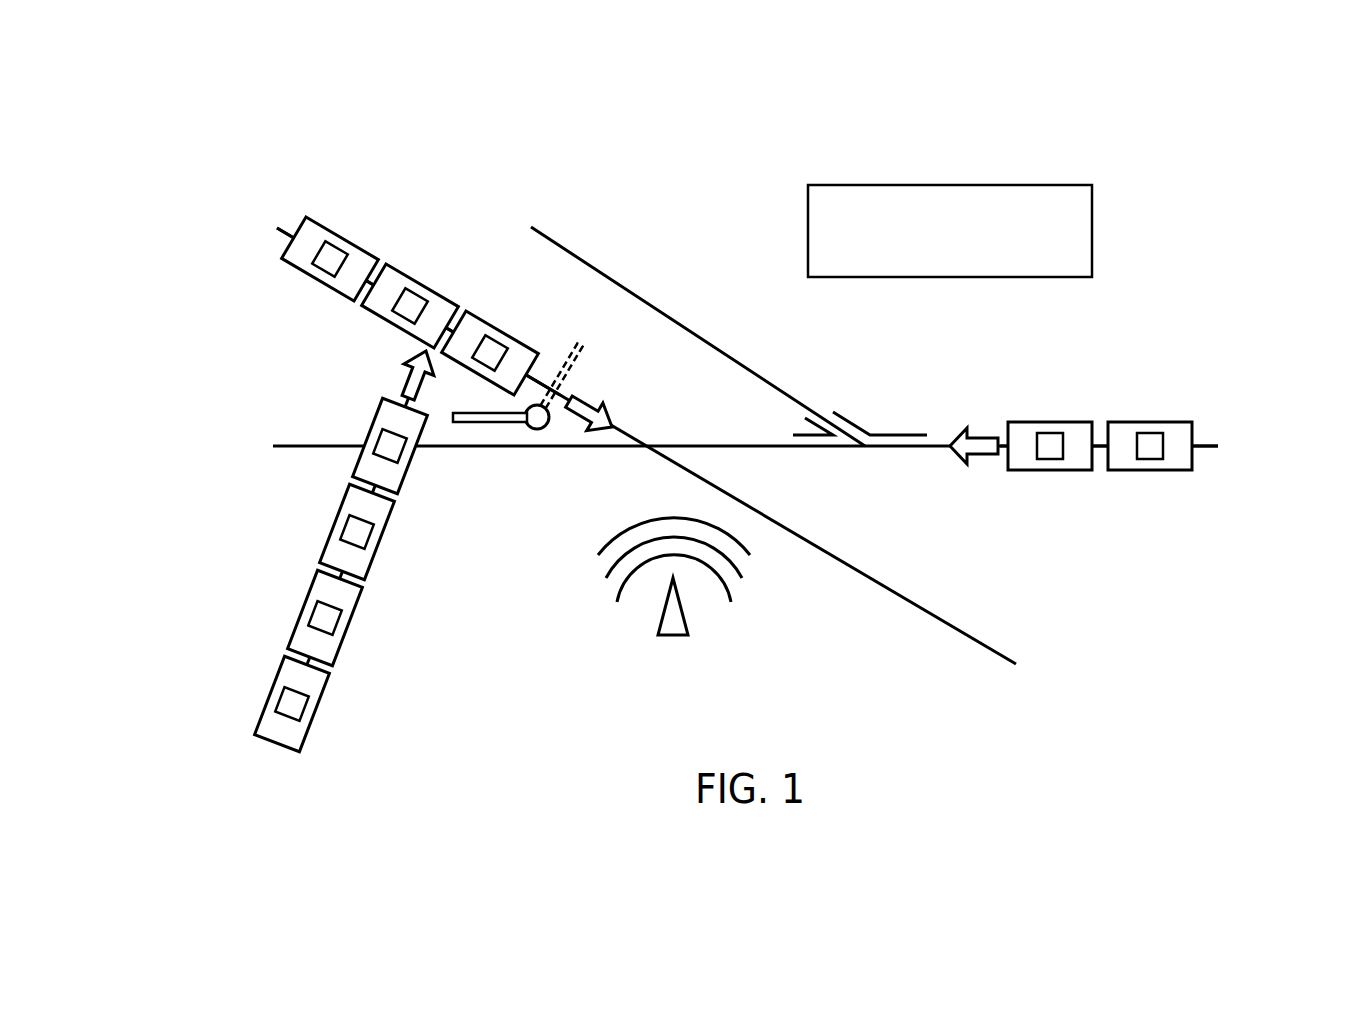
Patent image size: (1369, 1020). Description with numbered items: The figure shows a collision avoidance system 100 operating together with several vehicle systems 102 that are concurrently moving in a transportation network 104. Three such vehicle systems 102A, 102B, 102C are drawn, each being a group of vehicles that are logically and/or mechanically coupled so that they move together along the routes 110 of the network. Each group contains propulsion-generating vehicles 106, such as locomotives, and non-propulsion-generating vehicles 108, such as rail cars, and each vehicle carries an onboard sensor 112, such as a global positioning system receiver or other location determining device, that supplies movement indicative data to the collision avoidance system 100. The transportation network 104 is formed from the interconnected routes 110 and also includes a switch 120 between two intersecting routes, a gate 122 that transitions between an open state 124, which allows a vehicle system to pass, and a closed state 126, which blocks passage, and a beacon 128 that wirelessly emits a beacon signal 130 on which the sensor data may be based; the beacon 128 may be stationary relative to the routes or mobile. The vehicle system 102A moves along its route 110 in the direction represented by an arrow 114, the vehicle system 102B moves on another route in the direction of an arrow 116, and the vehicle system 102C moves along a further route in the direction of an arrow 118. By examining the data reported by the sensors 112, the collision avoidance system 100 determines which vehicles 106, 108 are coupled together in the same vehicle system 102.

The collision avoidance system 100 is at (950, 184).
The vehicle system 102 is at (258, 275).
The vehicle system 102A is at (419, 288).
The vehicle system 102B is at (314, 559).
The vehicle system 102C is at (1109, 393).
The transportation network 104 is at (814, 477).
The propulsion-generating vehicle 106 is at (547, 355).
The non-propulsion-generating vehicle 108 is at (308, 278).
The route 110 is at (873, 582).
The sensor 112 is at (288, 717).
The arrow 114 is at (612, 410).
The arrow 116 is at (403, 370).
The arrow 118 is at (983, 460).
The switch 120 is at (855, 464).
The gate 122 is at (543, 430).
The open state 124 is at (503, 424).
The closed state 126 is at (582, 355).
The beacon 128 is at (673, 640).
The beacon signal 130 is at (733, 591).